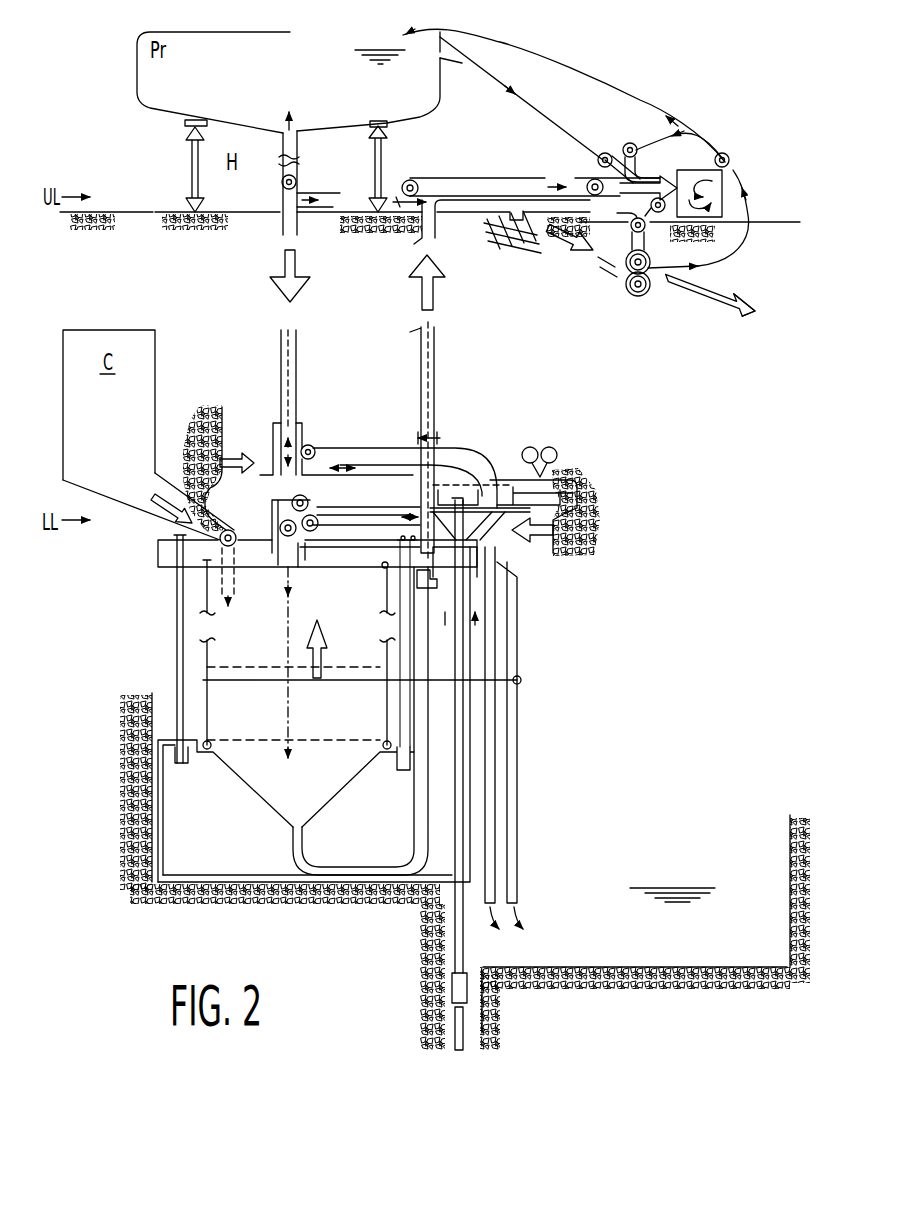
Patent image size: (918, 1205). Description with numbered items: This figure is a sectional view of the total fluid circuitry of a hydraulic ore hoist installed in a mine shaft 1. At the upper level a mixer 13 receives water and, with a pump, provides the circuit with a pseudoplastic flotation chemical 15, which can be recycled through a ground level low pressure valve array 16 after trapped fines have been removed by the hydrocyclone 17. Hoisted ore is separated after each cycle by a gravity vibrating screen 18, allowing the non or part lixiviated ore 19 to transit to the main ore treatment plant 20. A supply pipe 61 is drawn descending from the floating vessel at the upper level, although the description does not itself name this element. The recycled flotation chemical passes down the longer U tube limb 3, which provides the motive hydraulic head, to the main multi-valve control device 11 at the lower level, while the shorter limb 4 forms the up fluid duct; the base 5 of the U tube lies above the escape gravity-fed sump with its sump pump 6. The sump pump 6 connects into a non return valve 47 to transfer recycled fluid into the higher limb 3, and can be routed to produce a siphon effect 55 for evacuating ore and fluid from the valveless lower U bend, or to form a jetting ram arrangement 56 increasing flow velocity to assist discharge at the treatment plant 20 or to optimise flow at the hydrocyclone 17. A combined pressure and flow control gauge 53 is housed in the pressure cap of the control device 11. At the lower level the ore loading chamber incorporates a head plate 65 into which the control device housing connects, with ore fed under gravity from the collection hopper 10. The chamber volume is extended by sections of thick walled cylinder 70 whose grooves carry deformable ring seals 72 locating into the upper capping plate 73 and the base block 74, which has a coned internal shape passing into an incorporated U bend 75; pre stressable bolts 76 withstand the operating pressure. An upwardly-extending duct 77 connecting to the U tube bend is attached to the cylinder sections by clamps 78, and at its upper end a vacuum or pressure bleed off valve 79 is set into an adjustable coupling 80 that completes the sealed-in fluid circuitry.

The mine shaft 1 is at (122, 833).
The second flow conduit (longer U tube limb) 3 is at (296, 386).
The first flow conduit (U tube limb) 4 is at (421, 353).
The base of the U tube 5 is at (310, 900).
The sump pump 6 is at (507, 1053).
The feeding hopper 10 is at (137, 490).
The control device 11 is at (497, 470).
The mixer 13 is at (720, 195).
The pseudoplastic flotation chemical 15 is at (394, 102).
The low pressure valve array 16 is at (615, 150).
The hydrocyclone 17 is at (621, 296).
The gravity vibrating screen 18 is at (502, 247).
The non or part lixiviated ore 19 is at (712, 311).
The main ore treatment plant 20 is at (757, 306).
The non return valve 47 is at (312, 443).
The combined pressure and flow control gauge 53 is at (538, 450).
The siphon effect 55 is at (493, 818).
The jetting ram arrangement 56 is at (416, 177).
The supply pipe from ship 61 is at (306, 128).
The loading chamber head plate 65 is at (158, 555).
The thick walled cylinder 70 is at (205, 592).
The deformable ring seals 72 is at (385, 567).
The upper capping plate 73 is at (387, 613).
The base block 74 is at (220, 840).
The U bend 75 is at (333, 866).
The pre stressable bolts 76 is at (170, 633).
The upwardly-extending duct 77 is at (495, 760).
The clamps 78 is at (475, 678).
The vacuum or pressure bleed off valve 79 is at (498, 590).
The adjustable coupling 80 is at (437, 583).